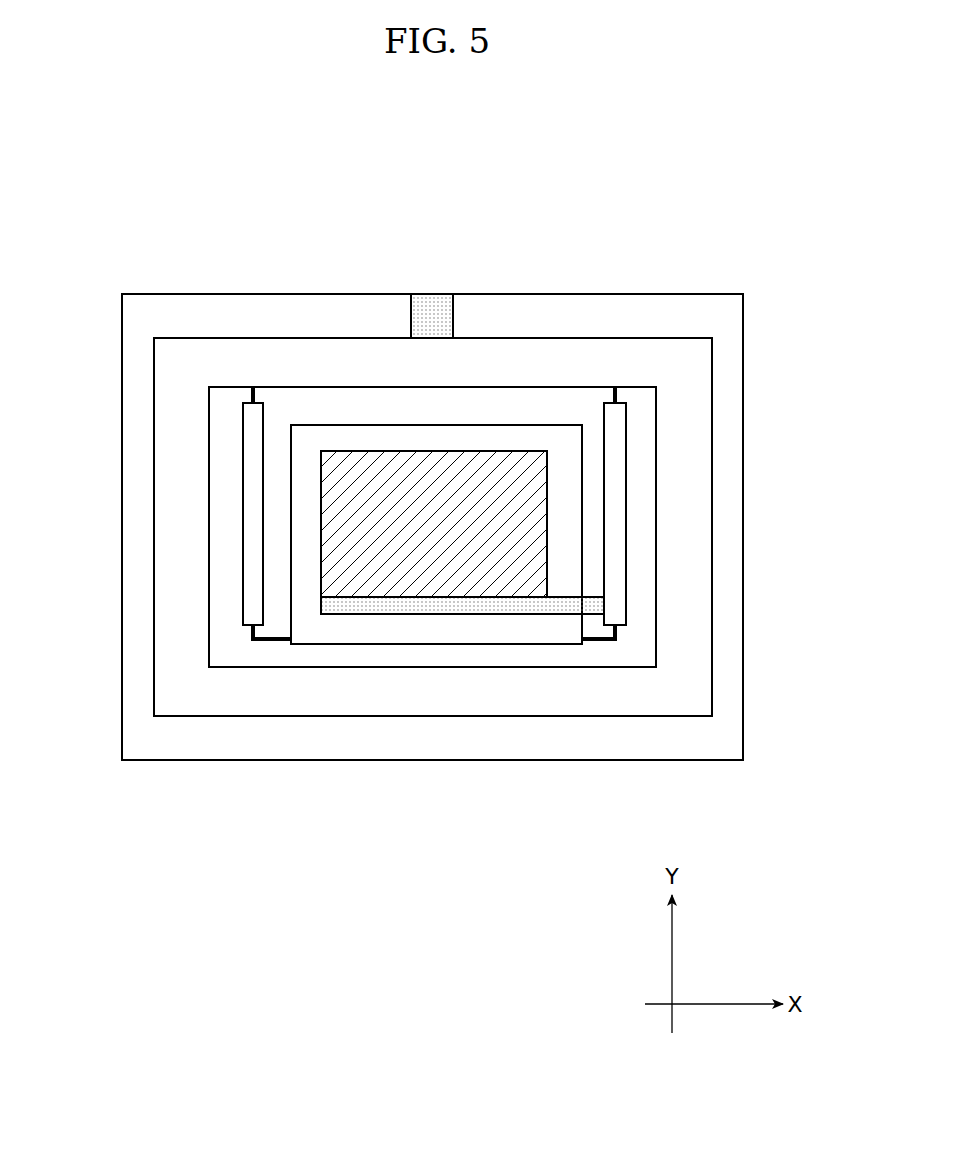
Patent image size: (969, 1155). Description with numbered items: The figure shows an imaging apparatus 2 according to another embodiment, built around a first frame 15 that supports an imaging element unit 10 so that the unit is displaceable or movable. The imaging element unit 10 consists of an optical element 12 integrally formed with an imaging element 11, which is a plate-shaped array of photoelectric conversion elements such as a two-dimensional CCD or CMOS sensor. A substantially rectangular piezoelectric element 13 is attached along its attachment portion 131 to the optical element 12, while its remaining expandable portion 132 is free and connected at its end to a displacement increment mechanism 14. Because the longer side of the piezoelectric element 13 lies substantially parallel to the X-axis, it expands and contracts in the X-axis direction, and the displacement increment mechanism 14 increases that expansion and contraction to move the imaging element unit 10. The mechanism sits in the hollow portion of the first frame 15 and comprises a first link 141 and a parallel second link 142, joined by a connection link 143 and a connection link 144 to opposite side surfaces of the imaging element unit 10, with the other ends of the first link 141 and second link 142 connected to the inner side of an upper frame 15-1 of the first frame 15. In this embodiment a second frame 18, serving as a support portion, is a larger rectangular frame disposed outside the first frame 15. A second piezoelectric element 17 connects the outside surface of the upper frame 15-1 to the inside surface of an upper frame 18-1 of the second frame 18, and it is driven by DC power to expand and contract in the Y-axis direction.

The imaging apparatus 2 is at (752, 250).
The imaging element unit 10 is at (516, 410).
The imaging element 11 is at (558, 425).
The optical element 12 is at (475, 450).
The piezoelectric element 13 is at (488, 851).
The attachment portion 131 is at (500, 614).
The expandable portion 132 is at (590, 618).
The displacement increment mechanism 14 is at (632, 513).
The first link 141 is at (243, 590).
The second link 142 is at (626, 590).
The connection link 143 is at (268, 641).
The connection link 144 is at (604, 641).
The first frame 15 is at (712, 514).
The upper frame 15-1 is at (251, 350).
The piezoelectric element 17 is at (433, 294).
The second frame 18 is at (660, 294).
The upper frame 18-1 is at (338, 302).